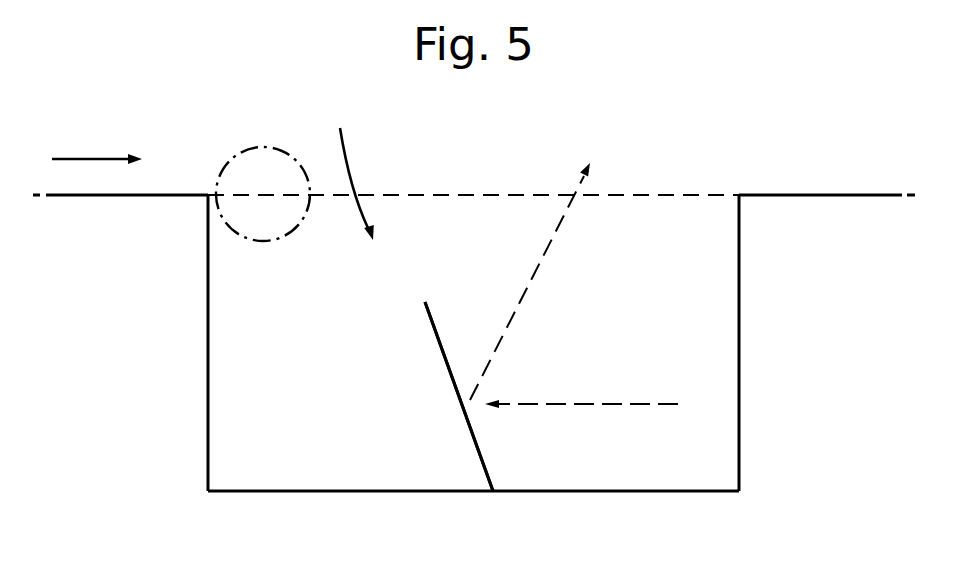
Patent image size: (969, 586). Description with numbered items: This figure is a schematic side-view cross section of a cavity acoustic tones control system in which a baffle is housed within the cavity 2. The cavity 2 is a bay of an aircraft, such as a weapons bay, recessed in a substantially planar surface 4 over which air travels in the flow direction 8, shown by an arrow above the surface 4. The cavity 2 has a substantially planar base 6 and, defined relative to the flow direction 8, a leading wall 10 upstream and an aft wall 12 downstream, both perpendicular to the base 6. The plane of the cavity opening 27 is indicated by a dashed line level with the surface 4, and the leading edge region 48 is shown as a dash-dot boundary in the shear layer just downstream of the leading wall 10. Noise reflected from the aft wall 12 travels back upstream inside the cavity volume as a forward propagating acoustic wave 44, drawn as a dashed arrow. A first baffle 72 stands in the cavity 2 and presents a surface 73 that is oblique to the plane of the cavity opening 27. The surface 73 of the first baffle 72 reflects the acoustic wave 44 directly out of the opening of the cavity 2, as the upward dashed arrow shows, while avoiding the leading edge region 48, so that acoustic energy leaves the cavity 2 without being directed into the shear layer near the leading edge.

The cavity 2 is at (355, 170).
The surface 4 is at (90, 197).
The planar base 6 is at (665, 492).
The flow direction 8 is at (85, 158).
The leading wall 10 is at (208, 357).
The aft wall 12 is at (740, 357).
The plane of the cavity opening 27 is at (480, 193).
The reflected acoustic wave 44 is at (610, 404).
The leading edge region 48 is at (278, 236).
The first baffle 72 is at (426, 373).
The surface 73 is at (433, 322).